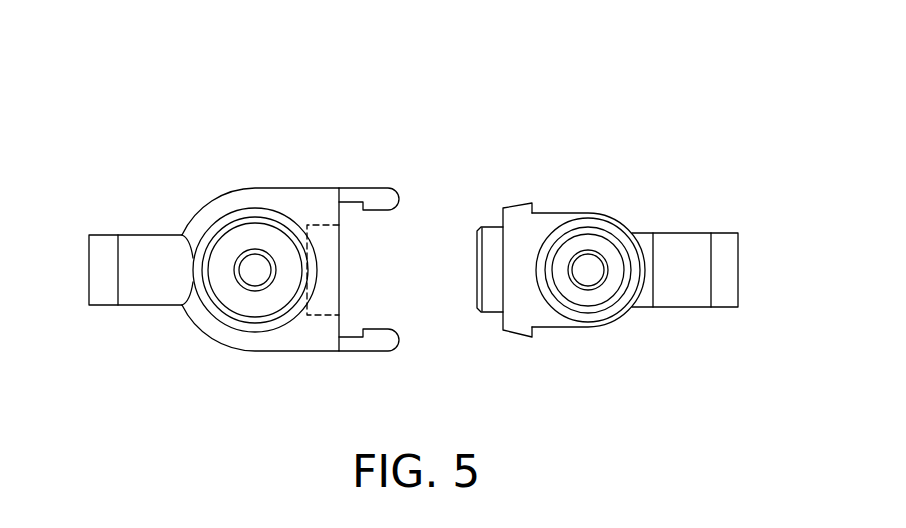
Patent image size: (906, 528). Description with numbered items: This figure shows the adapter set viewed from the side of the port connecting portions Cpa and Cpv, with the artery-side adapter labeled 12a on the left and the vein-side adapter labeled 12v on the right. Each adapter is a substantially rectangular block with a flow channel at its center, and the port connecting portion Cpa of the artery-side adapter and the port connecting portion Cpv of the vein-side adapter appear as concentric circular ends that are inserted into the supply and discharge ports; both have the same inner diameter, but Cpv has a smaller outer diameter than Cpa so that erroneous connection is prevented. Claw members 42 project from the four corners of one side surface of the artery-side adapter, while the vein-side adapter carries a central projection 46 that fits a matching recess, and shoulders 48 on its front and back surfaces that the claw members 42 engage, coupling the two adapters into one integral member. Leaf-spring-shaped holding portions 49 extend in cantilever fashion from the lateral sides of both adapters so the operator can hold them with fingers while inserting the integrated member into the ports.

The first connector (air side) 12a is at (200, 100).
The second connector (vacuum side) 12v is at (640, 127).
The port connecting portion Cpa is at (256, 223).
The port connecting portion Cpv is at (588, 233).
The claw members 42 is at (367, 188).
The projection 46 is at (476, 272).
The shoulders 48 is at (533, 212).
The holding portions 49 is at (105, 235).